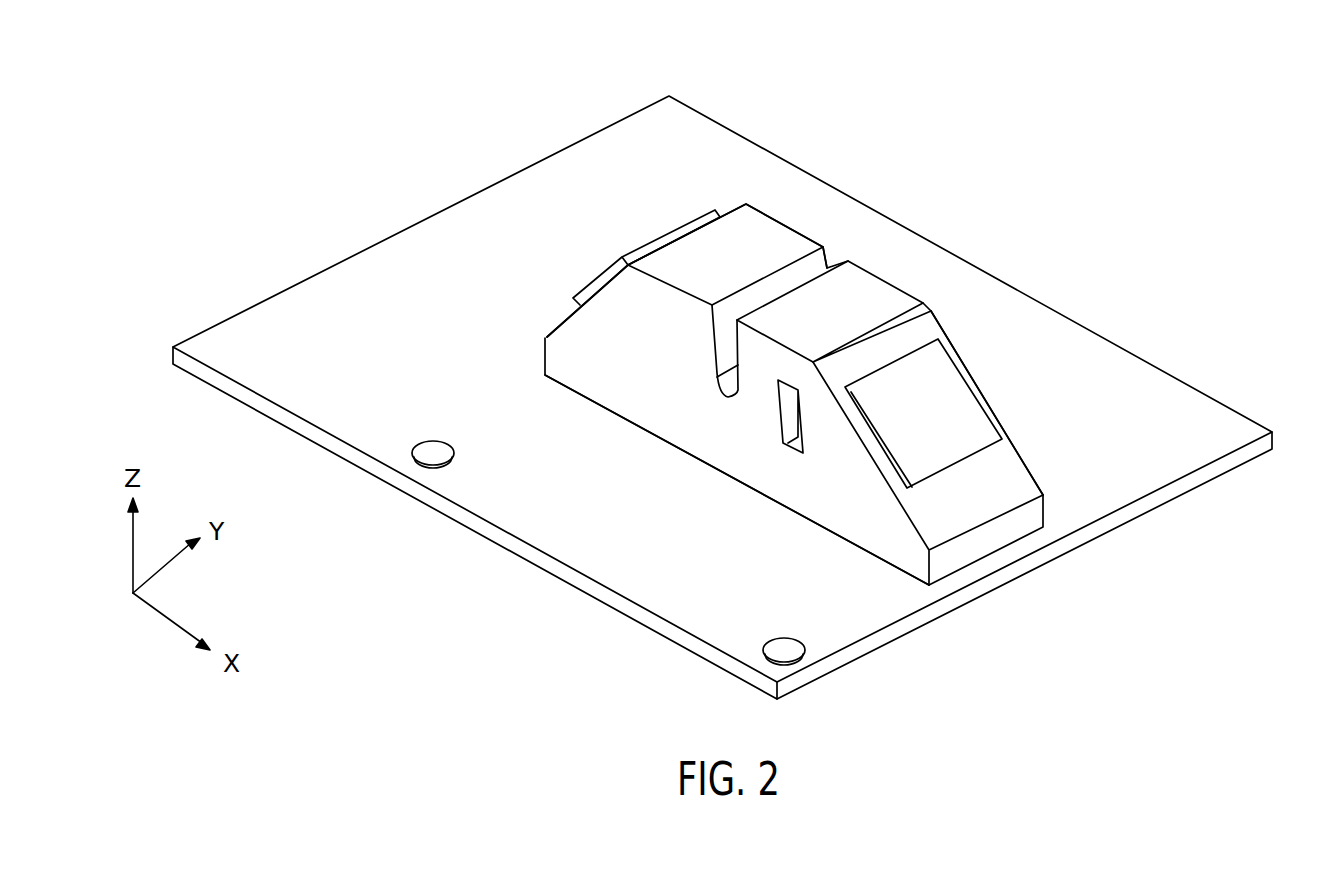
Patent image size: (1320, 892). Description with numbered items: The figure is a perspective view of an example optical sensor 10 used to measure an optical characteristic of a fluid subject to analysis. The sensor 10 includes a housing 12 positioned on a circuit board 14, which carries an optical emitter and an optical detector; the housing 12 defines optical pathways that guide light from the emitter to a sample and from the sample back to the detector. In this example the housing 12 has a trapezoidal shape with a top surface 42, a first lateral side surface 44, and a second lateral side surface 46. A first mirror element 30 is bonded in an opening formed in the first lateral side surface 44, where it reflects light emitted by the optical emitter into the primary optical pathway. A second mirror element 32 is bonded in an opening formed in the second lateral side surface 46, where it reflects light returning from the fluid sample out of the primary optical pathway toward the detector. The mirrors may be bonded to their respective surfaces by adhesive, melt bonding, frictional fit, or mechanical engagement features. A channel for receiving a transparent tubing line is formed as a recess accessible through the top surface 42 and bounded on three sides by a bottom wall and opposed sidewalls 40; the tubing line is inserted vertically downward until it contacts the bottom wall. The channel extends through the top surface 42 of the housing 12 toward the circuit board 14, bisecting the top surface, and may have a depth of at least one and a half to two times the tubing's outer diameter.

The optical sensor 10 is at (313, 155).
The housing 12 is at (722, 345).
The circuit board 14 is at (1180, 418).
The first mirror element 30 is at (605, 272).
The second mirror element 32 is at (940, 398).
The opposed sidewalls 40 is at (810, 262).
The top surface 42 is at (755, 233).
The first lateral side surface 44 is at (563, 320).
The second lateral side surface 46 is at (973, 500).